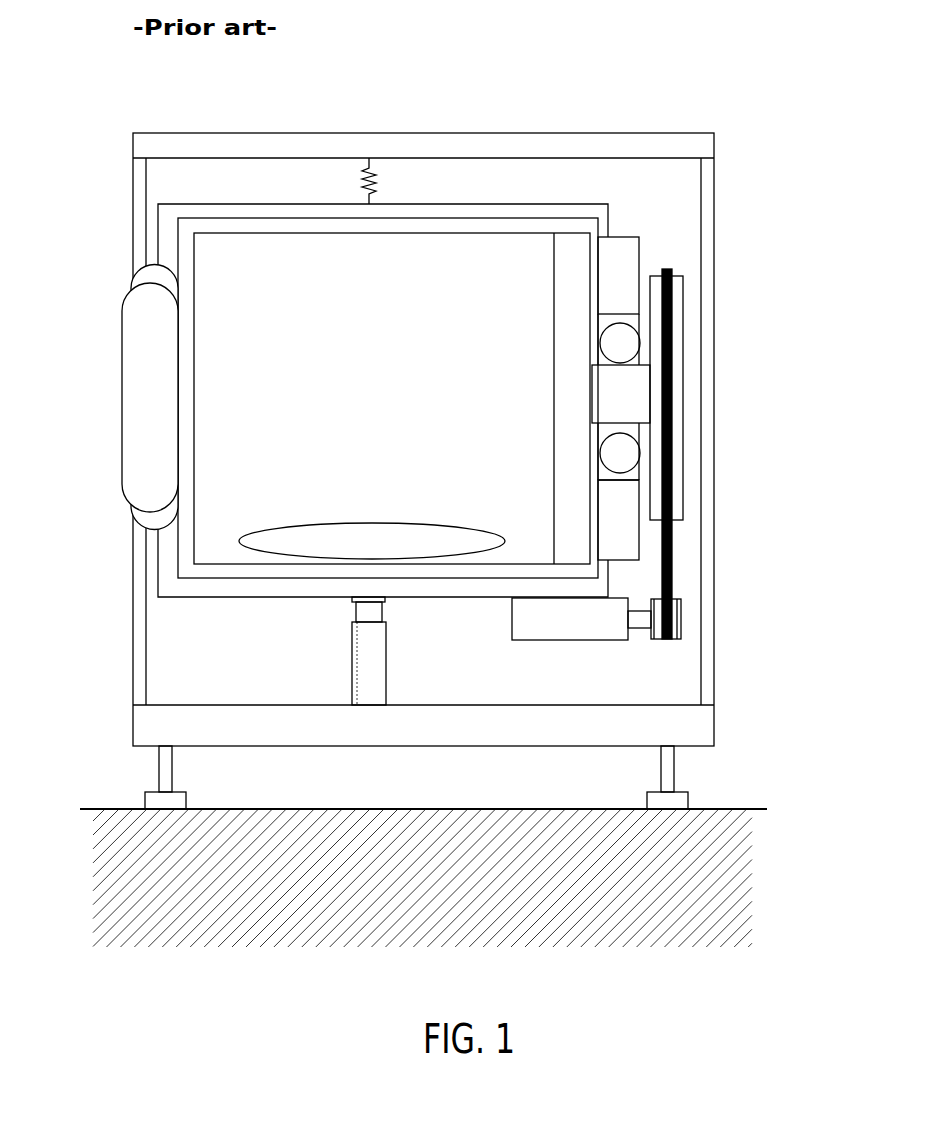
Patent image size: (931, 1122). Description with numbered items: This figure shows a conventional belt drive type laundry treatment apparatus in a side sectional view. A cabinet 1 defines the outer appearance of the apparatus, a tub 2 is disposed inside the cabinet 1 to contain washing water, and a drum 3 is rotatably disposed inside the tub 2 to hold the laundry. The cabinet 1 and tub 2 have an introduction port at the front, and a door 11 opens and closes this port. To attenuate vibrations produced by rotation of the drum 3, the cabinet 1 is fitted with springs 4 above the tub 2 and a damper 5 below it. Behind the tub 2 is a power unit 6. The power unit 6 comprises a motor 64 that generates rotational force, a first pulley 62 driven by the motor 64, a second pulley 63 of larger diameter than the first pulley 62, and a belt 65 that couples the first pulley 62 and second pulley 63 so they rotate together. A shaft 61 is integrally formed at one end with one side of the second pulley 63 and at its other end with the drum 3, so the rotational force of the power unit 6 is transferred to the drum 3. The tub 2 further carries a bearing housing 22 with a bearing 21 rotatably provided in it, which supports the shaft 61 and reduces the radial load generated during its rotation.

The cabinet 1 is at (698, 142).
The tub 2 is at (568, 208).
The drum 3 is at (512, 265).
The springs 4 is at (372, 172).
The damper 5 is at (352, 660).
The power unit 6 is at (672, 493).
The door 11 is at (157, 416).
The bearing 21 is at (630, 345).
The bearing housing 22 is at (620, 252).
The shaft 61 is at (640, 395).
The first pulley 62 is at (682, 622).
The second pulley 63 is at (682, 462).
The motor 64 is at (651, 657).
The belt 65 is at (672, 560).